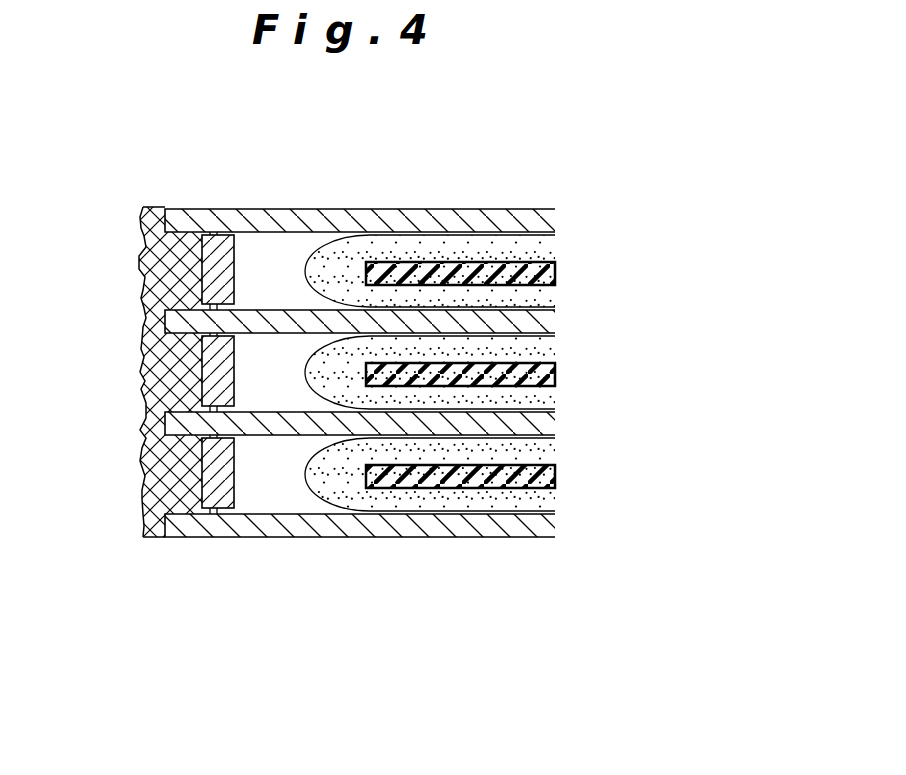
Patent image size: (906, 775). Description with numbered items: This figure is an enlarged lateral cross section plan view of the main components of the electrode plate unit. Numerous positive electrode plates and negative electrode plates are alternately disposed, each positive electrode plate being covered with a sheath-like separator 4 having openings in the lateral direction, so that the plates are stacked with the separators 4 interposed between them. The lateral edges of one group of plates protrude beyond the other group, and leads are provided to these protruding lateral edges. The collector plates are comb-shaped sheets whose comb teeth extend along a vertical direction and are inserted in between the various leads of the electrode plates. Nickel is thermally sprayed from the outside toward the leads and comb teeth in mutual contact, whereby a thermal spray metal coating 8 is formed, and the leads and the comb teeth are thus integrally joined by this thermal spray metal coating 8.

The separator 4 is at (440, 498).
The thermal spray metal coating 8 is at (167, 485).